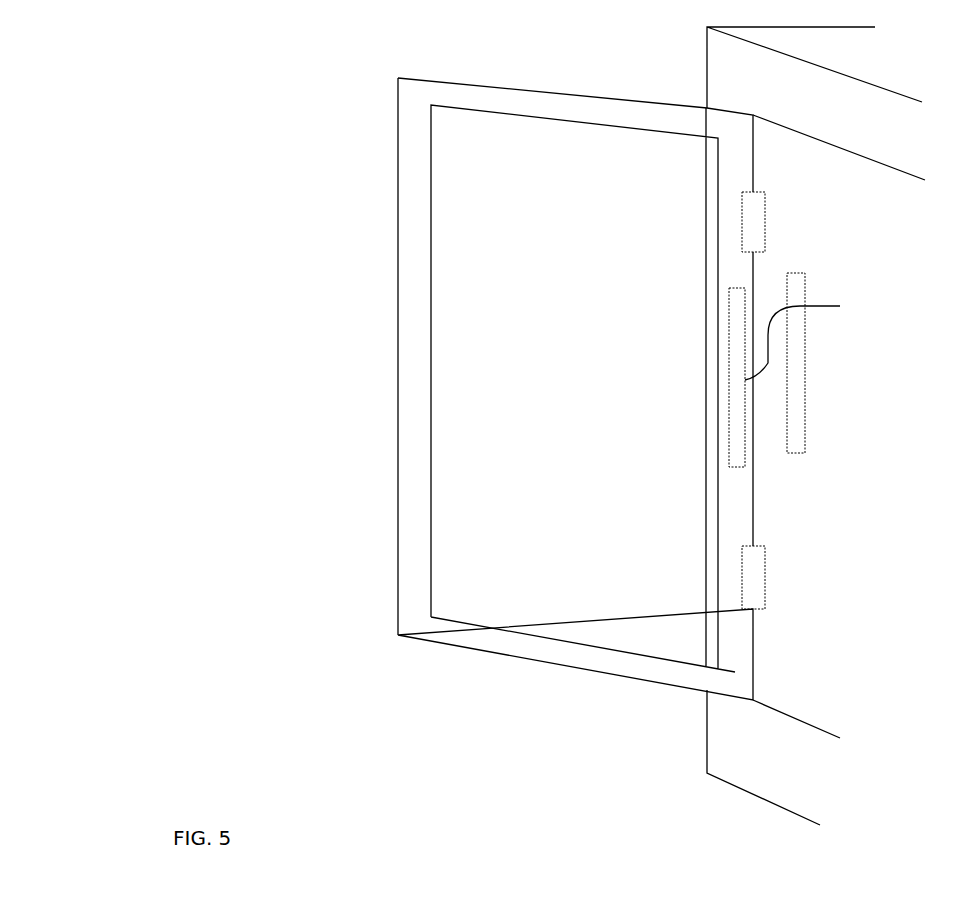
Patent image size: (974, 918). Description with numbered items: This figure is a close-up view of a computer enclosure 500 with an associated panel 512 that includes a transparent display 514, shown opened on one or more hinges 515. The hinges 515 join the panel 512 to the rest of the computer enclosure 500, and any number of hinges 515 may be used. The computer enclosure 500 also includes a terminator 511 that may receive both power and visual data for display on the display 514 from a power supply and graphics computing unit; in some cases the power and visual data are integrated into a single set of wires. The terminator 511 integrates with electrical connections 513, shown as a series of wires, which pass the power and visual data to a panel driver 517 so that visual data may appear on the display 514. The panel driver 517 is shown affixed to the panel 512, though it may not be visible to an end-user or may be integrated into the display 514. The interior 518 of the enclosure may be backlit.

The computer enclosure 500 is at (560, 727).
The terminator 511 is at (805, 363).
The panel 512 is at (398, 347).
The electrical connections 513 is at (812, 341).
The transparent display 514 is at (450, 218).
The hinges 515 is at (764, 222).
The panel driver 517 is at (731, 467).
The interior 518 is at (792, 698).